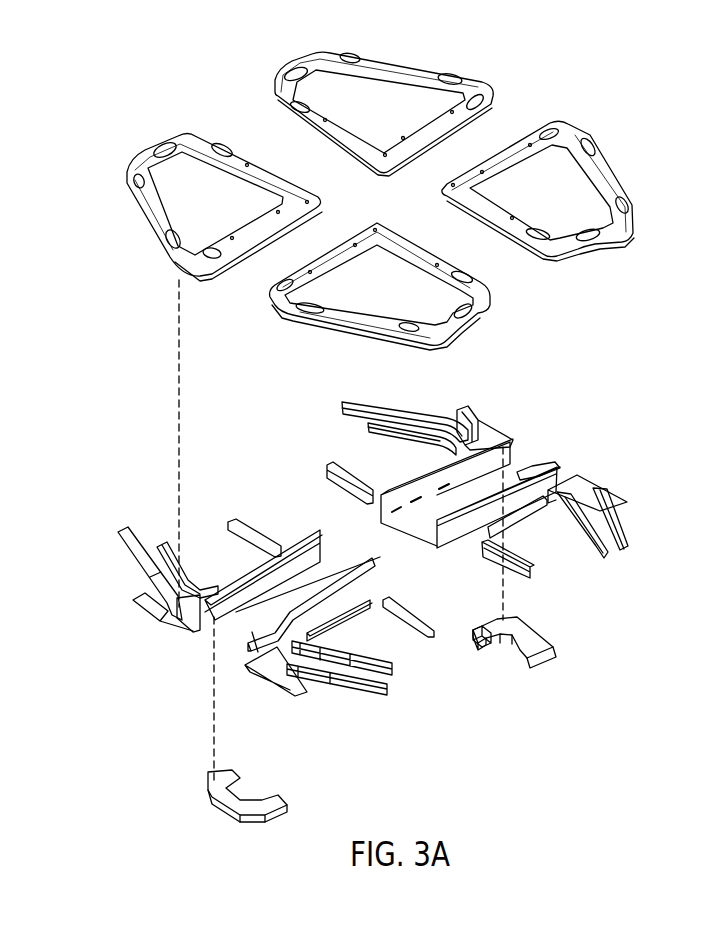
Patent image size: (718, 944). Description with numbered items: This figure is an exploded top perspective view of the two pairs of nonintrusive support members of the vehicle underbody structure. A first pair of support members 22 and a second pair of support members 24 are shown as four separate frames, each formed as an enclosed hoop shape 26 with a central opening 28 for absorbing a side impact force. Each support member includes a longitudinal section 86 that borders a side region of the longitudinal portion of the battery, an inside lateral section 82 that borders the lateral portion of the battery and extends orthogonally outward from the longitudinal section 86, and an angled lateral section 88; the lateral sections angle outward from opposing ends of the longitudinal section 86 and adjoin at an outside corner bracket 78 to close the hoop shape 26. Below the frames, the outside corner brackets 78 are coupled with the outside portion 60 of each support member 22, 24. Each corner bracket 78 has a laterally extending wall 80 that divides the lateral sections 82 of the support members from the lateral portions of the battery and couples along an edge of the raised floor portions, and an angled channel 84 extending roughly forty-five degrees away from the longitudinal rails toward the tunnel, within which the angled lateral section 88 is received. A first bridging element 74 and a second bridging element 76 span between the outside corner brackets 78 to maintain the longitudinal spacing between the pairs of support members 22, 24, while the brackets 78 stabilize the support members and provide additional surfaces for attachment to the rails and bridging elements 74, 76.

The first pair of support members 22 is at (378, 62).
The second pair of support members 24 is at (137, 163).
The hoop shape 26 is at (262, 88).
The central opening 28 is at (389, 119).
The outside portion 60 is at (477, 87).
The first bridging element 74 is at (535, 630).
The second bridging element 76 is at (224, 810).
The outside corner bracket 78 is at (496, 433).
The laterally extending wall 80 is at (400, 498).
The inside lateral section 82 is at (430, 126).
The angled channel 84 is at (412, 418).
The longitudinal section 86 is at (334, 127).
The angled lateral section 88 is at (415, 70).